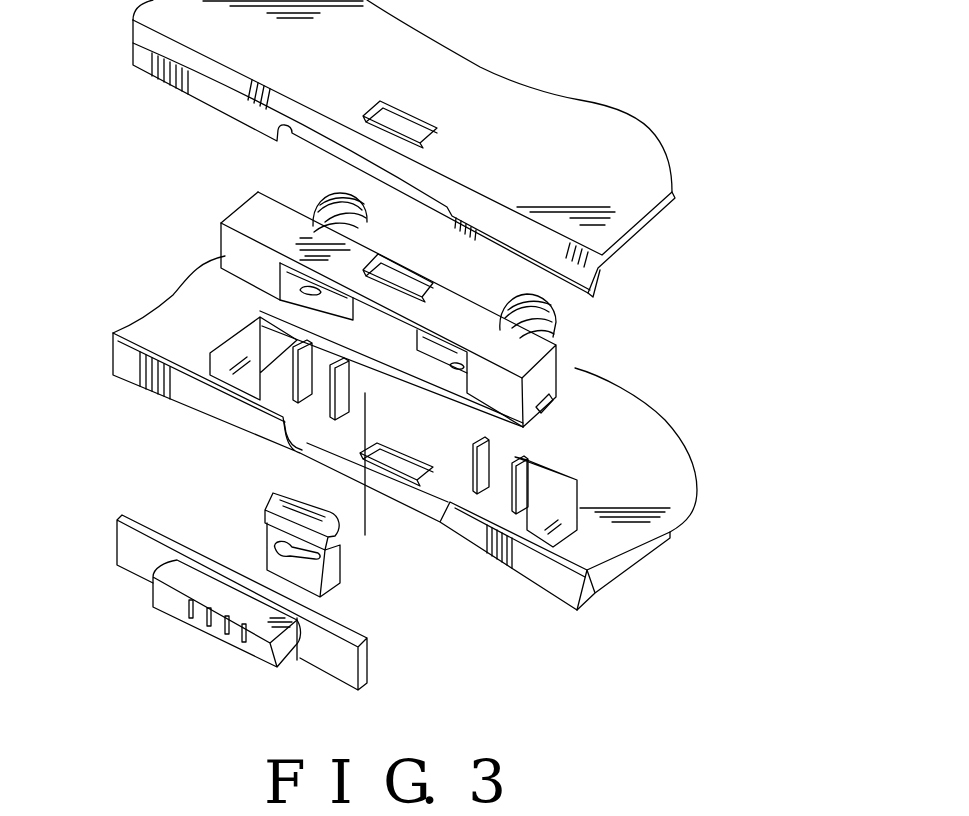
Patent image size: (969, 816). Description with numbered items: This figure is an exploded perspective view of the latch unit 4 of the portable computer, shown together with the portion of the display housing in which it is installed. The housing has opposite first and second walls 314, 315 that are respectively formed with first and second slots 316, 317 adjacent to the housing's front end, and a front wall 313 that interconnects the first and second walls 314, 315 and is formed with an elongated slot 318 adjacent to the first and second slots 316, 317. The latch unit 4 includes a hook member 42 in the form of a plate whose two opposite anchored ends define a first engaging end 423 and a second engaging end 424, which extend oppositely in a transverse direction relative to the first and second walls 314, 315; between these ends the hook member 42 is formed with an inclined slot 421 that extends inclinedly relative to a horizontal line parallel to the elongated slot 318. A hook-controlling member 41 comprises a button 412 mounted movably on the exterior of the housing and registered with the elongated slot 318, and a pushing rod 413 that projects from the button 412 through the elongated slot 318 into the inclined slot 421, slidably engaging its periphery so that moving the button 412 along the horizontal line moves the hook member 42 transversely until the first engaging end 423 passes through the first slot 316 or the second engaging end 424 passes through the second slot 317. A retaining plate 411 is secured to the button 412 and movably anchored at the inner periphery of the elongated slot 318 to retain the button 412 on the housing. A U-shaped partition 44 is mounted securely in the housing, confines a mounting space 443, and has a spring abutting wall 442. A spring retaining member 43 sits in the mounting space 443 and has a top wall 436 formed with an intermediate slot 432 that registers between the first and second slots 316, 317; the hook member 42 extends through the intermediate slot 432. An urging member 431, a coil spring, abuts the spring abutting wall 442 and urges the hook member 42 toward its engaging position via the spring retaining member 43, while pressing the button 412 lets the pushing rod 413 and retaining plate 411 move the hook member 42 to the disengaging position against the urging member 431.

The latch unit 4 is at (150, 256).
The hook-controlling member 41 is at (110, 557).
The retaining plate 411 is at (127, 543).
The button 412 is at (170, 605).
The pushing rod 413 is at (300, 607).
The hook member 42 is at (343, 609).
The inclined slot 421 is at (268, 532).
The first engaging end 423 is at (263, 577).
The second engaging end 424 is at (278, 488).
The spring retaining member 43 is at (573, 370).
The urging member 431 is at (553, 326).
The intermediate slot 432 is at (392, 277).
The top wall 436 is at (250, 213).
The U-shaped partition 44 is at (600, 495).
The spring abutting wall 442 is at (572, 475).
The mounting space 443 is at (507, 517).
The front wall 313 is at (562, 583).
The first wall 314 is at (603, 600).
The second wall 315 is at (600, 140).
The first slot 316 is at (402, 468).
The second slot 317 is at (408, 127).
The elongated slot 318 is at (298, 447).